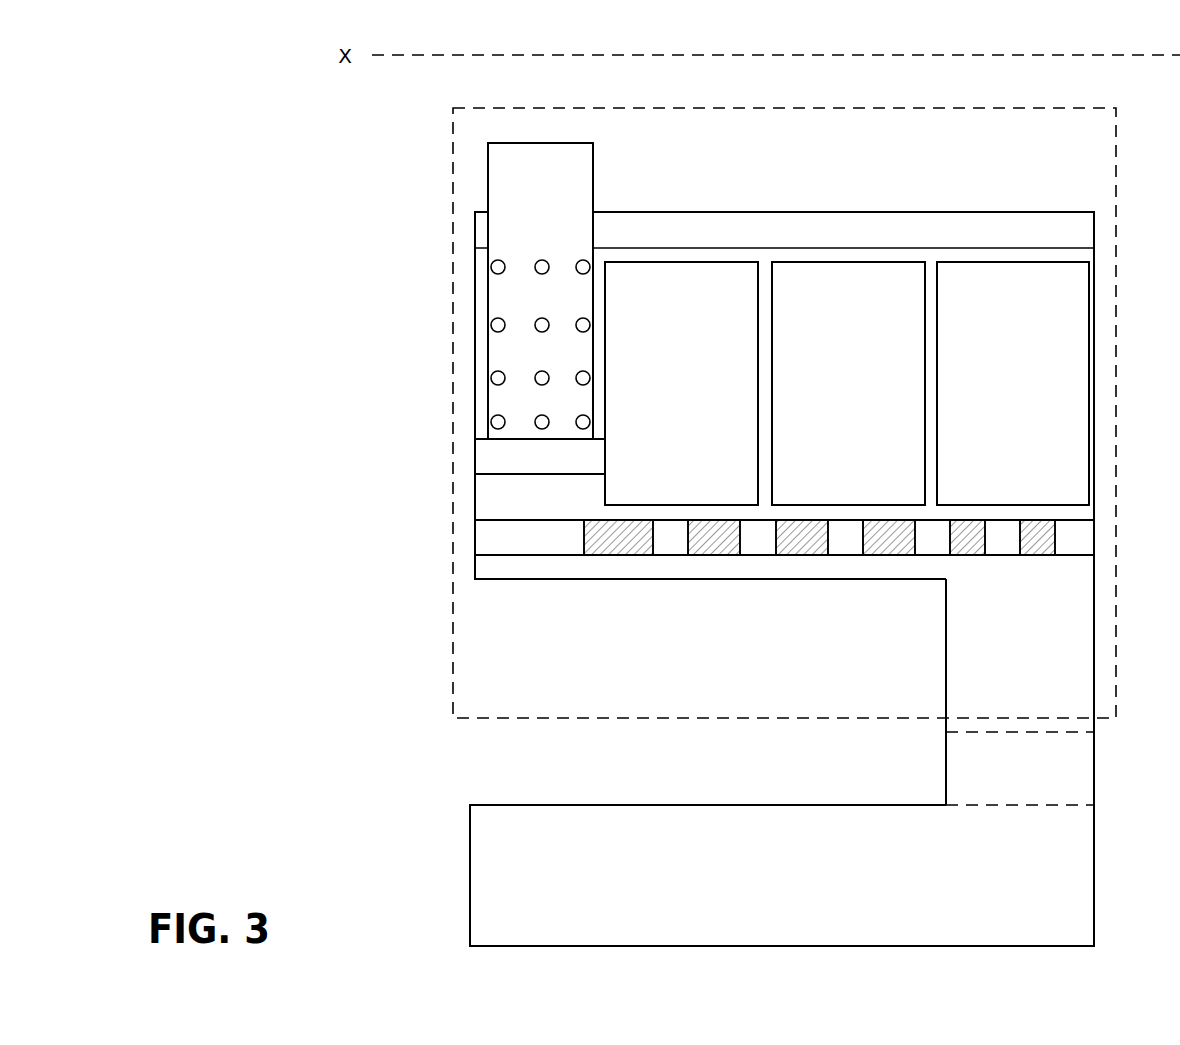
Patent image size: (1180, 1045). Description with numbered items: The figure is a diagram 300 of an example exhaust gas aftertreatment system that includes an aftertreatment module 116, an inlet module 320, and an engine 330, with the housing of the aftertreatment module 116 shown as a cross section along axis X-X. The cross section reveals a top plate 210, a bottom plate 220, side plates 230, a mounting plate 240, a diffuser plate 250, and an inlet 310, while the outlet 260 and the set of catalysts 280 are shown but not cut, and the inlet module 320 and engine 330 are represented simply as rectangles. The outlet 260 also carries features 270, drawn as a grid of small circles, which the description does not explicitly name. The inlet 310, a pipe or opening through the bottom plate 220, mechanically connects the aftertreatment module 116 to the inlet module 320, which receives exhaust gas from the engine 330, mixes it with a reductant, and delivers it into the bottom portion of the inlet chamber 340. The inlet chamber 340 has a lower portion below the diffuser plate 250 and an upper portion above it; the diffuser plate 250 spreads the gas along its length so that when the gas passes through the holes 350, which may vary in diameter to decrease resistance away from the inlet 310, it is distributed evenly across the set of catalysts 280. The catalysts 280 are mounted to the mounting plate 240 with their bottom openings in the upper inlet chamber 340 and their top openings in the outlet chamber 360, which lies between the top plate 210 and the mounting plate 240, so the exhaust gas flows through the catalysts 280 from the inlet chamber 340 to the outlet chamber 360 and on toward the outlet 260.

The diagram 300 is at (240, 50).
The aftertreatment module 116 is at (453, 110).
The top plate 210 is at (732, 241).
The bottom plate 220 is at (765, 579).
The side plates 230 is at (475, 334).
The mounting plate 240 is at (515, 469).
The diffuser plate 250 is at (510, 552).
The outlet 260 is at (488, 176).
The pins 270 is at (542, 260).
The set of catalysts 280 is at (665, 382).
The inlet 310 is at (946, 645).
The inlet module 320 is at (946, 768).
The engine 330 is at (779, 887).
The inlet chamber 340 is at (528, 494).
The holes 350 is at (964, 550).
The outlet chamber 360 is at (777, 244).